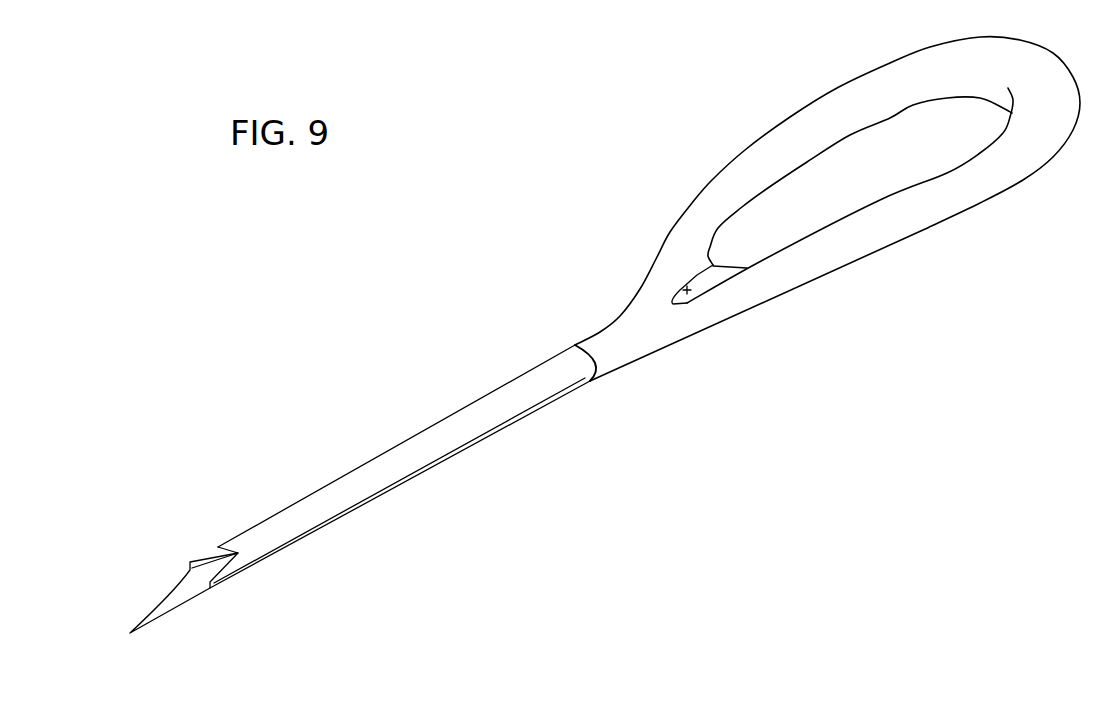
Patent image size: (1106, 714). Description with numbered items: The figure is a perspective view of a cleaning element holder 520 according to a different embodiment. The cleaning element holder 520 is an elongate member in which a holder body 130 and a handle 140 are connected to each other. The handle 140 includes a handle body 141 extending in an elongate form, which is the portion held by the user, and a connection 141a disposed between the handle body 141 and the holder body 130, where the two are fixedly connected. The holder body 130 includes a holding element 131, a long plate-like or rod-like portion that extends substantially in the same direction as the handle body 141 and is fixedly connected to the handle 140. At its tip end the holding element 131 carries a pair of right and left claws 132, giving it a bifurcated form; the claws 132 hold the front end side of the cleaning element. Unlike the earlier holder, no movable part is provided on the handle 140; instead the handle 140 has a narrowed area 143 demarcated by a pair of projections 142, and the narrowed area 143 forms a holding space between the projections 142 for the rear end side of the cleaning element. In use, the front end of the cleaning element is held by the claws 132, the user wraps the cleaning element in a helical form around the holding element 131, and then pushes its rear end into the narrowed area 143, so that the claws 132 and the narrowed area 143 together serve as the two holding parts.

The holder body 130 is at (352, 336).
The holding element 131 is at (313, 507).
The claws 132 is at (169, 611).
The handle 140 is at (746, 120).
The handle body 141 is at (885, 228).
The connection 141a is at (620, 340).
The projections 142 is at (702, 263).
The narrowed area 143 is at (685, 301).
The cleaning element holder 520 is at (788, 451).